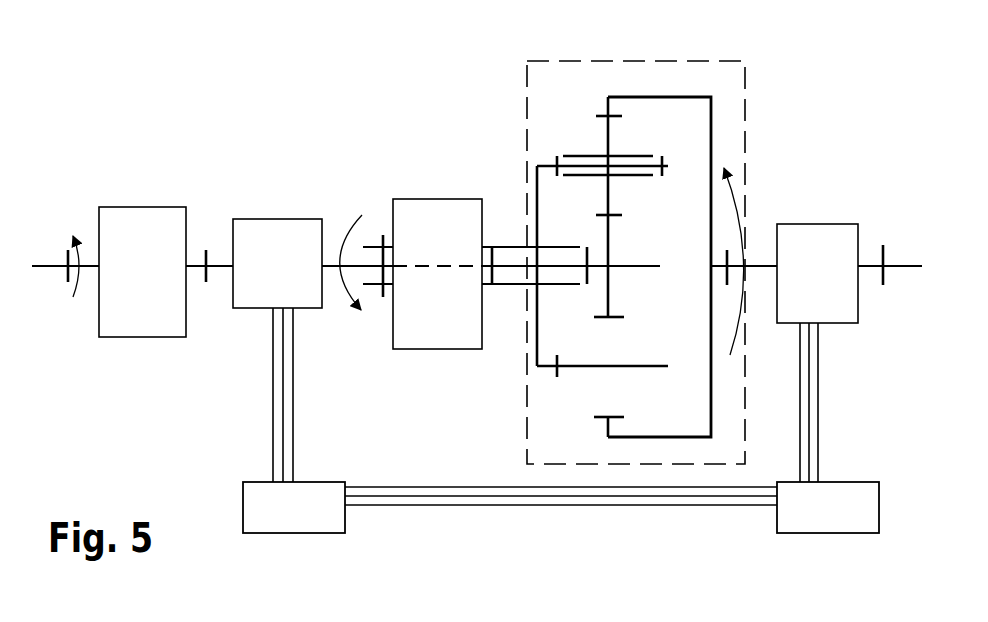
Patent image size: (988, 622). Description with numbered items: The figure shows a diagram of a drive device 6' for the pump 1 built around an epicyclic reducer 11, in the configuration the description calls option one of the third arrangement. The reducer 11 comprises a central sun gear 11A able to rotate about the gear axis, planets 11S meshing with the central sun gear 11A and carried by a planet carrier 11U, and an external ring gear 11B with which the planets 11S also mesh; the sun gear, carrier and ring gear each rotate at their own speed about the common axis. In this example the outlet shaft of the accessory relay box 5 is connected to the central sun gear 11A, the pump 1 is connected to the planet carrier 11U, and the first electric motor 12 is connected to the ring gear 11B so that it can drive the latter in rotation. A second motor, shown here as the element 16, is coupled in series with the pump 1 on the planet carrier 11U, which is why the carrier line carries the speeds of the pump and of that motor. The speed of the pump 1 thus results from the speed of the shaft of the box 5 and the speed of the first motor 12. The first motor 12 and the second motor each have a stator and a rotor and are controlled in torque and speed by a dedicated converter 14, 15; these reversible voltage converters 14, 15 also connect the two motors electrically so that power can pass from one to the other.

The device 6' is at (94, 148).
The accessory relay box 5 is at (129, 235).
The electric machine (clutch 13) 16 is at (265, 237).
The pump 1 is at (435, 227).
The reducer 11 is at (573, 43).
The planet carrier 11U is at (537, 177).
The planets 11S is at (610, 203).
The central sun gear 11A is at (610, 252).
The ring gear 11B is at (670, 97).
The first electric motor 12 is at (817, 258).
The converter 15 is at (305, 498).
The converter 14 is at (817, 512).